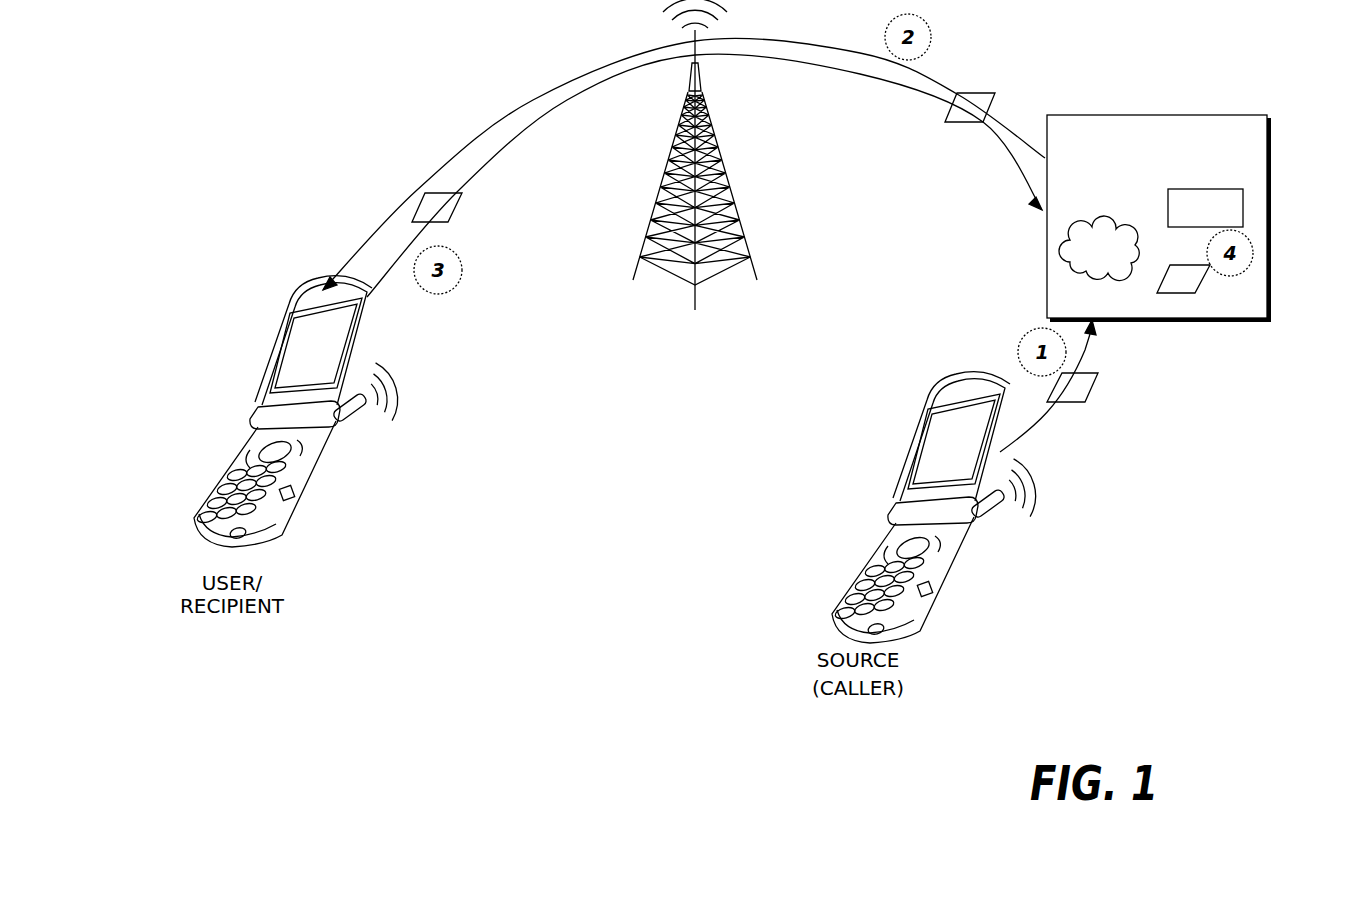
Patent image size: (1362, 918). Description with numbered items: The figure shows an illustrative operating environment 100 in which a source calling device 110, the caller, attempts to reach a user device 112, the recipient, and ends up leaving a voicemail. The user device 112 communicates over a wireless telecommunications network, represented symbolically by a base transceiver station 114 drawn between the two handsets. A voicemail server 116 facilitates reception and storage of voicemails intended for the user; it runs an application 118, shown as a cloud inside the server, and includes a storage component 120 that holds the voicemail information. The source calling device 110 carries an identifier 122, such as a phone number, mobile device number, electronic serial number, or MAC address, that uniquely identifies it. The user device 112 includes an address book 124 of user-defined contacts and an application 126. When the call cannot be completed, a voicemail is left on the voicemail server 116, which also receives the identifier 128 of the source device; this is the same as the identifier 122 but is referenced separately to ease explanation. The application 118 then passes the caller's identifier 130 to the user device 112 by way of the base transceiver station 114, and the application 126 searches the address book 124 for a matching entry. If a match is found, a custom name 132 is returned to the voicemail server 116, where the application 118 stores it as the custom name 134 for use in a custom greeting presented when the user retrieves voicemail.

The operating environment 100 is at (412, 752).
The source calling device 110 is at (915, 455).
The user device 112 is at (283, 360).
The base transceiver station 114 is at (752, 258).
The voicemail server 116 is at (1270, 160).
The application 118 is at (1067, 252).
The storage component 120 is at (1246, 212).
The identifier 122 is at (948, 553).
The address book 124 is at (293, 500).
The application 126 is at (242, 538).
The identifier 128 is at (1075, 405).
The caller's identifier 130 is at (967, 92).
The custom name 132 is at (458, 203).
The custom name 134 is at (1160, 296).